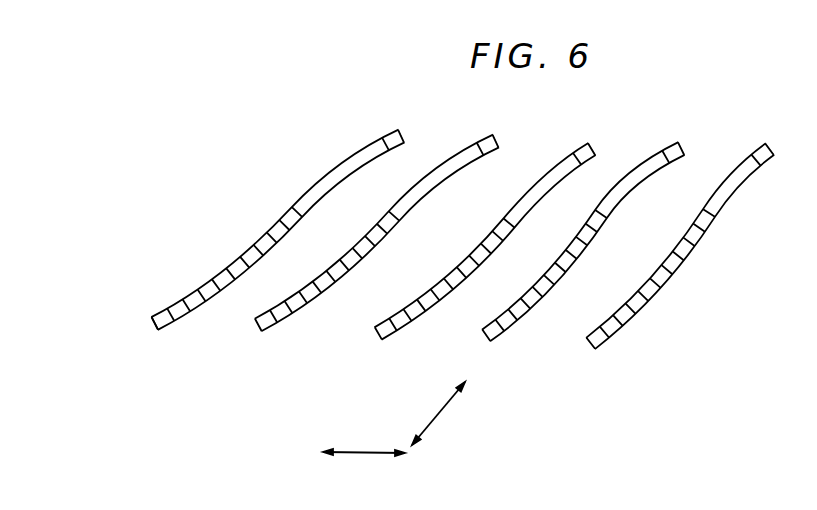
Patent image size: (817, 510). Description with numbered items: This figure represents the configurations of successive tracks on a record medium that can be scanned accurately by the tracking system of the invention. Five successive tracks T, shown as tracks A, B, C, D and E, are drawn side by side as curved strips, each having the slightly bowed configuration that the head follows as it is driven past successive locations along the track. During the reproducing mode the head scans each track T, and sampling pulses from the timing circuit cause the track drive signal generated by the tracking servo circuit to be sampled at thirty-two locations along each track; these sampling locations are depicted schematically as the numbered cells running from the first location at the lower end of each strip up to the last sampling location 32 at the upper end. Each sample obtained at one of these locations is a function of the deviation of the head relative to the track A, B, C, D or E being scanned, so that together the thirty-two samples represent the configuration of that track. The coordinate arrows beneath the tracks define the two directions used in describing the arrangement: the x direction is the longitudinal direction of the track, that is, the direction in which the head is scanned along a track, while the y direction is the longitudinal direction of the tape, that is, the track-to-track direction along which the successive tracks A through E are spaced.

The track T is at (278, 243).
The track A is at (158, 330).
The track B is at (262, 331).
The track C is at (382, 339).
The track D is at (490, 341).
The track E is at (595, 349).
The sampling location 32 is at (393, 140).
The x direction x is at (438, 413).
The y direction y is at (364, 463).